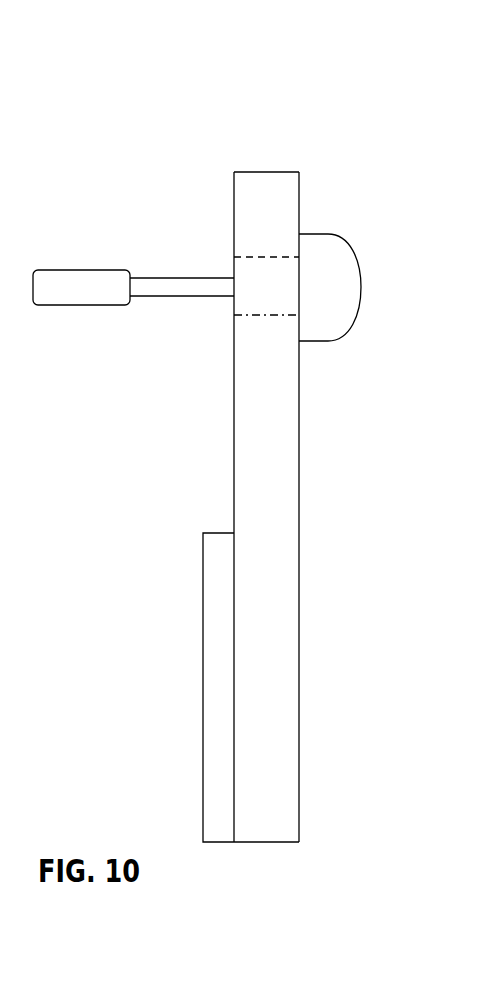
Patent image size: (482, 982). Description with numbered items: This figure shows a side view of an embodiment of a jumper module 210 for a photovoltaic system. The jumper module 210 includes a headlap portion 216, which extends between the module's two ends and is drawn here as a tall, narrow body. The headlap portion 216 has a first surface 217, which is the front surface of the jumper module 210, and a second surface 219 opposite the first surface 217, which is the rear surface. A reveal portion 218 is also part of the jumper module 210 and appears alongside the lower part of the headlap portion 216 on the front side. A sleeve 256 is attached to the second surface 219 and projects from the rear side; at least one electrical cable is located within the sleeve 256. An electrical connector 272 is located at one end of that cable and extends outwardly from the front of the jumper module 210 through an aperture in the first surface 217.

The jumper module 210 is at (367, 158).
The headlap portion 216 is at (287, 462).
The first surface 217 is at (233, 393).
The reveal portion 218 is at (203, 665).
The second surface 219 is at (299, 680).
The sleeve 256 is at (362, 295).
The electrical connector 272 is at (71, 270).